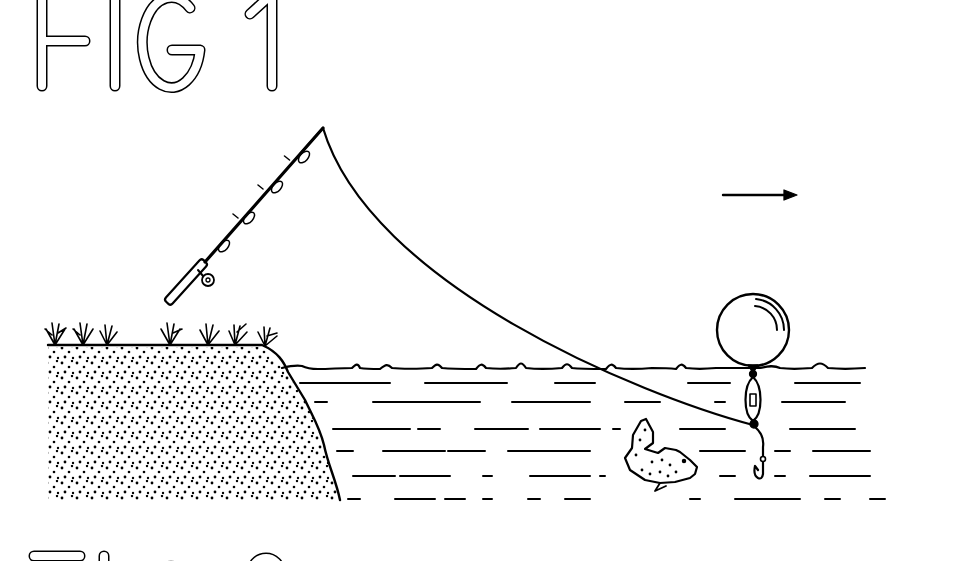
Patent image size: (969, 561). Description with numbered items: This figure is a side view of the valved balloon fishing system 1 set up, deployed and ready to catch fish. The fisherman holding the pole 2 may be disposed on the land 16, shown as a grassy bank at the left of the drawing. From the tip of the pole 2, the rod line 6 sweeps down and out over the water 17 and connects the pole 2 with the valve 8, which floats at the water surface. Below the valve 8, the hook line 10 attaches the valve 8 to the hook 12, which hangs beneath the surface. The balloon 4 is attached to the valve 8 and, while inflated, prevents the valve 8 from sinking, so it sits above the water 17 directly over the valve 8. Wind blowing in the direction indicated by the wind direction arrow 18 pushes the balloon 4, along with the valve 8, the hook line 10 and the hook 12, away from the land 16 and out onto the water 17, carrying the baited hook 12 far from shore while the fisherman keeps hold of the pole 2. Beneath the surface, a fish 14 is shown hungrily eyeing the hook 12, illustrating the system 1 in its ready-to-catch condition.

The valved balloon fishing system 1 is at (616, 168).
The pole 2 is at (234, 230).
The balloon 4 is at (773, 297).
The rod line 6 is at (477, 302).
The valve 8 is at (766, 395).
The hook line 10 is at (764, 440).
The hook 12 is at (767, 470).
The fish 14 is at (671, 486).
The land 16 is at (128, 345).
The water 17 is at (333, 368).
The wind direction arrow 18 is at (741, 170).